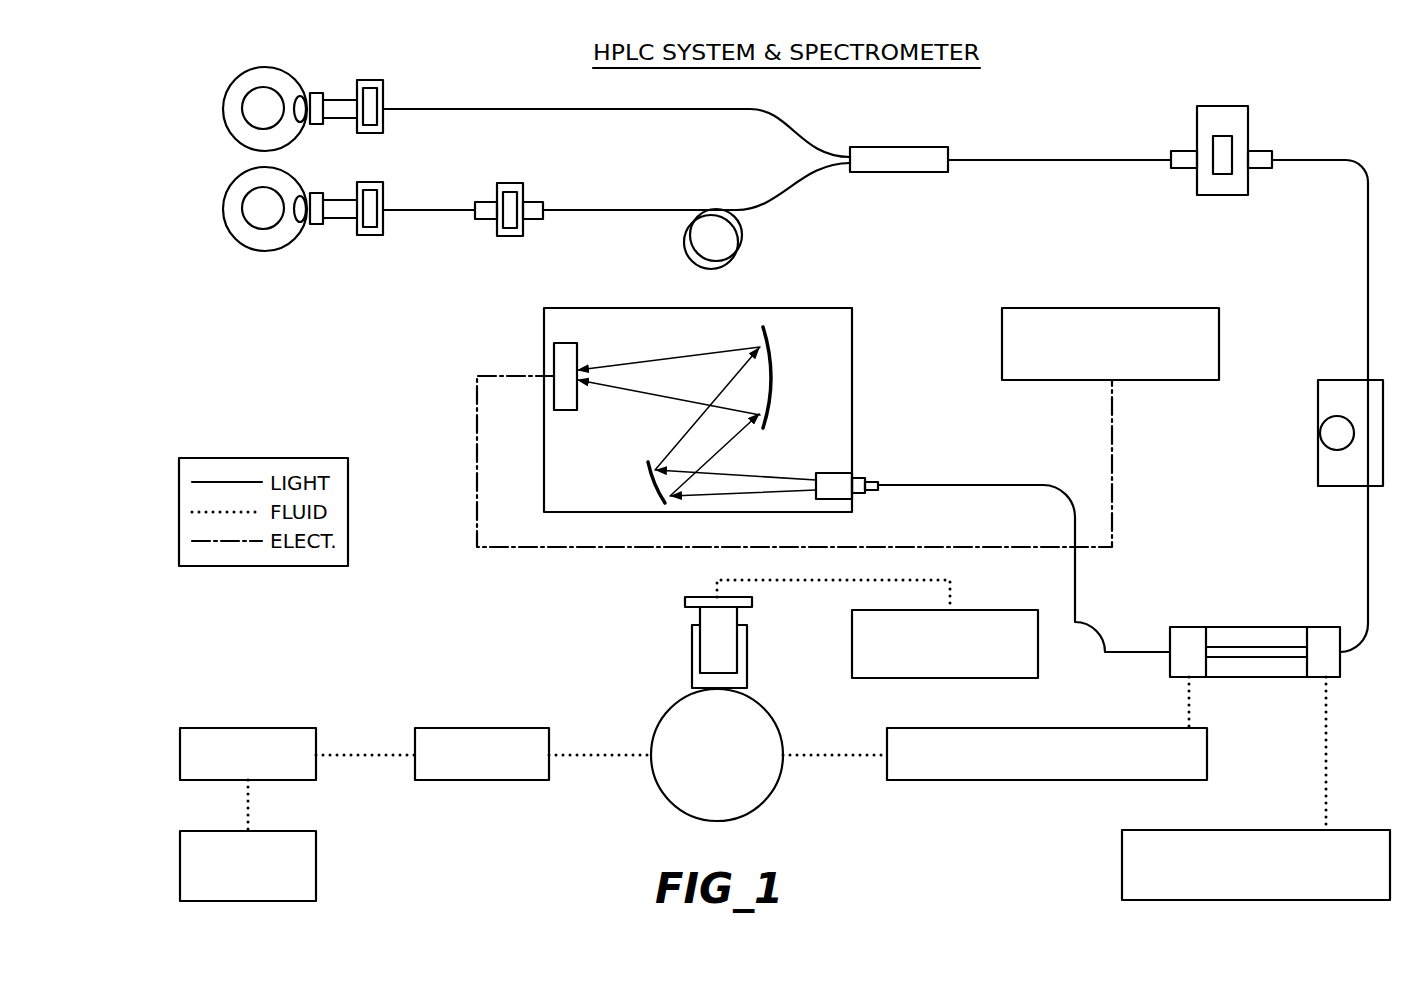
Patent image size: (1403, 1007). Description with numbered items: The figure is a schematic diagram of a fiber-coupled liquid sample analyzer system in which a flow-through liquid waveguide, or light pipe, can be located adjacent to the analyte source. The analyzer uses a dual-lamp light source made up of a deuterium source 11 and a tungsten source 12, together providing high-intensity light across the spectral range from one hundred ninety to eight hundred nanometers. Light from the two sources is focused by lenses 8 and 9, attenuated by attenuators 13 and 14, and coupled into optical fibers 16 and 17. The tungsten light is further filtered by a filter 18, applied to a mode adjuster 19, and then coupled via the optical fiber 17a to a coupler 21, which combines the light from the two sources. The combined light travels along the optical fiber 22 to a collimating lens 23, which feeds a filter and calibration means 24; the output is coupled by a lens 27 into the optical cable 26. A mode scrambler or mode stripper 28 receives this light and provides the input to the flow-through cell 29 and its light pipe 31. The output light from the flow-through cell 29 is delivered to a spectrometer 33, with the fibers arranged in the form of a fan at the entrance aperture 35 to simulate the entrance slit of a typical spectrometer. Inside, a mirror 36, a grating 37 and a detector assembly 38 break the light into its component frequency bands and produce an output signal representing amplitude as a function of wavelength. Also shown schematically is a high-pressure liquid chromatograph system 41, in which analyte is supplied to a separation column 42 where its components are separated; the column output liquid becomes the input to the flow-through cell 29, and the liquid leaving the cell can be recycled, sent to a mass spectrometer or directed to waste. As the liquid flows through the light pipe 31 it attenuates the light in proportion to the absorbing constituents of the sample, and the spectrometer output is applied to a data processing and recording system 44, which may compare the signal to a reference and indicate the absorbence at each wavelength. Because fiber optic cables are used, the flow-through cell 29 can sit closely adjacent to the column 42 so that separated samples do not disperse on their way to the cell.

The lens 8 is at (302, 92).
The lens 9 is at (302, 224).
The deuterium source 11 is at (232, 120).
The tungsten source 12 is at (232, 198).
The attenuator 13 is at (383, 82).
The attenuator 14 is at (384, 231).
The optical fiber 16 is at (594, 112).
The optical fiber 17 is at (437, 208).
The optical fiber 17a is at (790, 198).
The filter 18 is at (524, 222).
The mode adjuster 19 is at (717, 232).
The coupler 21 is at (913, 173).
The optical fiber 22 is at (1012, 158).
The collimating lens 23 is at (1180, 170).
The filter and calibration means 24 is at (1200, 104).
The optical cable 26 is at (1368, 257).
The lens 27 is at (1264, 170).
The mode scrambler 28 is at (1320, 433).
The flow-through cell 29 is at (1278, 624).
The light pipe 31 is at (1257, 656).
The spectrometer 33 is at (856, 362).
The entrance aperture 35 is at (832, 480).
The mirror 36 is at (650, 482).
The grating 37 is at (774, 376).
The detector assembly 38 is at (554, 345).
The high-pressure liquid chromatograph system 41 is at (594, 678).
The separation column 42 is at (1034, 782).
The data processing and recording system 44 is at (1062, 382).